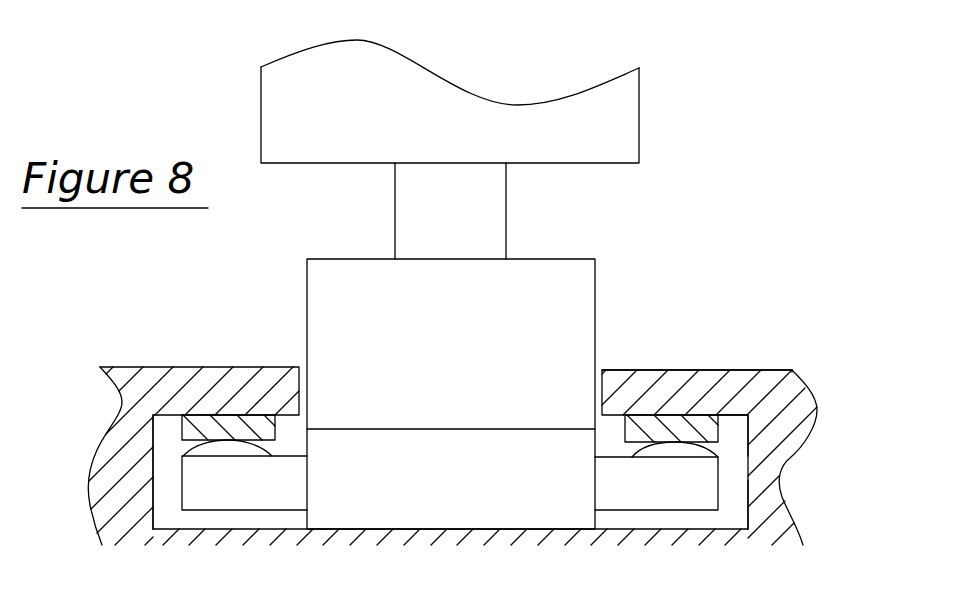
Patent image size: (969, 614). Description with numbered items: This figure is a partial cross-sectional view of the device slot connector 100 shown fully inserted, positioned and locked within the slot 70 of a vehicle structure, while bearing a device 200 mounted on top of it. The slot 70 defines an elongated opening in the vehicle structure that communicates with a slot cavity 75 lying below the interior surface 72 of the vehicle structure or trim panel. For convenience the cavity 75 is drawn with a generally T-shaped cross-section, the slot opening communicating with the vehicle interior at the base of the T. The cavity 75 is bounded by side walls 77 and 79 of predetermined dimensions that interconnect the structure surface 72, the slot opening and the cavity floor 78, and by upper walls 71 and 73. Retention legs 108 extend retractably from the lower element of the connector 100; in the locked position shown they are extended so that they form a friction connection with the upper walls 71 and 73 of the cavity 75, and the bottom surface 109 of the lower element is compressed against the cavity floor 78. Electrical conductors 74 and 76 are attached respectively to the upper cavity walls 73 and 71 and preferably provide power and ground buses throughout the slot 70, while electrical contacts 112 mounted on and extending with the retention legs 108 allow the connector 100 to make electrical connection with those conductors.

The device 200 is at (360, 115).
The device slot connector 100 is at (590, 225).
The slot 70 is at (300, 385).
The upper wall 71 is at (284, 425).
The interior surface 72 is at (668, 368).
The upper wall 73 is at (610, 432).
The electrical conductor 74 is at (725, 428).
The slot cavity 75 is at (180, 518).
The electrical conductor 76 is at (175, 440).
The side wall 77 is at (150, 492).
The cavity floor 78 is at (722, 457).
The side wall 79 is at (745, 528).
The retention leg 108 is at (795, 507).
The bottom surface 109 is at (407, 531).
The electrical contact 112 is at (655, 528).